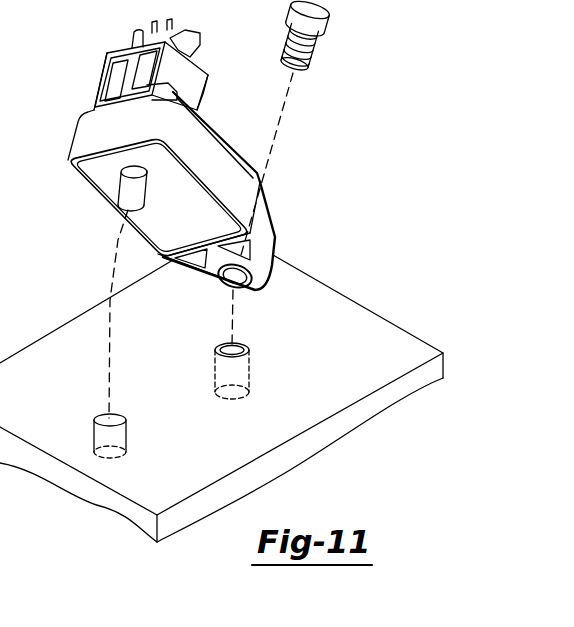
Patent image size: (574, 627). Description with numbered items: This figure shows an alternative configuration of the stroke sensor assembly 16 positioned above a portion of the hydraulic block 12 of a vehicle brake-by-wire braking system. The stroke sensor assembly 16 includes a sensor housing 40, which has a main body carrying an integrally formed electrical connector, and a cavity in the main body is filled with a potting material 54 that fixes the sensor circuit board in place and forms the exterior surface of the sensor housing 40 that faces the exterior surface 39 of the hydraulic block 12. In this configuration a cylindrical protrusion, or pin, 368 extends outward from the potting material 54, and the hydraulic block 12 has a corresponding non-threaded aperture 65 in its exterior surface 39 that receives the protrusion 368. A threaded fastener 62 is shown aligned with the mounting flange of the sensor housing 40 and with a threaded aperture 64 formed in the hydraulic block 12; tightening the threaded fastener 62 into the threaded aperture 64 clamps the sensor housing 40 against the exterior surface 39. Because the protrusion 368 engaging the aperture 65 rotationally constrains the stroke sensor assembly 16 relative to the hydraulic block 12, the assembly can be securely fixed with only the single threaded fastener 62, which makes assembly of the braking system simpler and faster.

The hydraulic block 12 is at (323, 278).
The stroke sensor assembly 16 is at (173, 155).
The exterior surface 39 is at (370, 340).
The sensor housing 40 is at (173, 155).
The potting material 54 is at (198, 212).
The threaded fastener 62 is at (310, 62).
The threaded aperture 64 is at (248, 343).
The aperture 65 is at (126, 420).
The cylindrical protrusion 368 is at (121, 190).